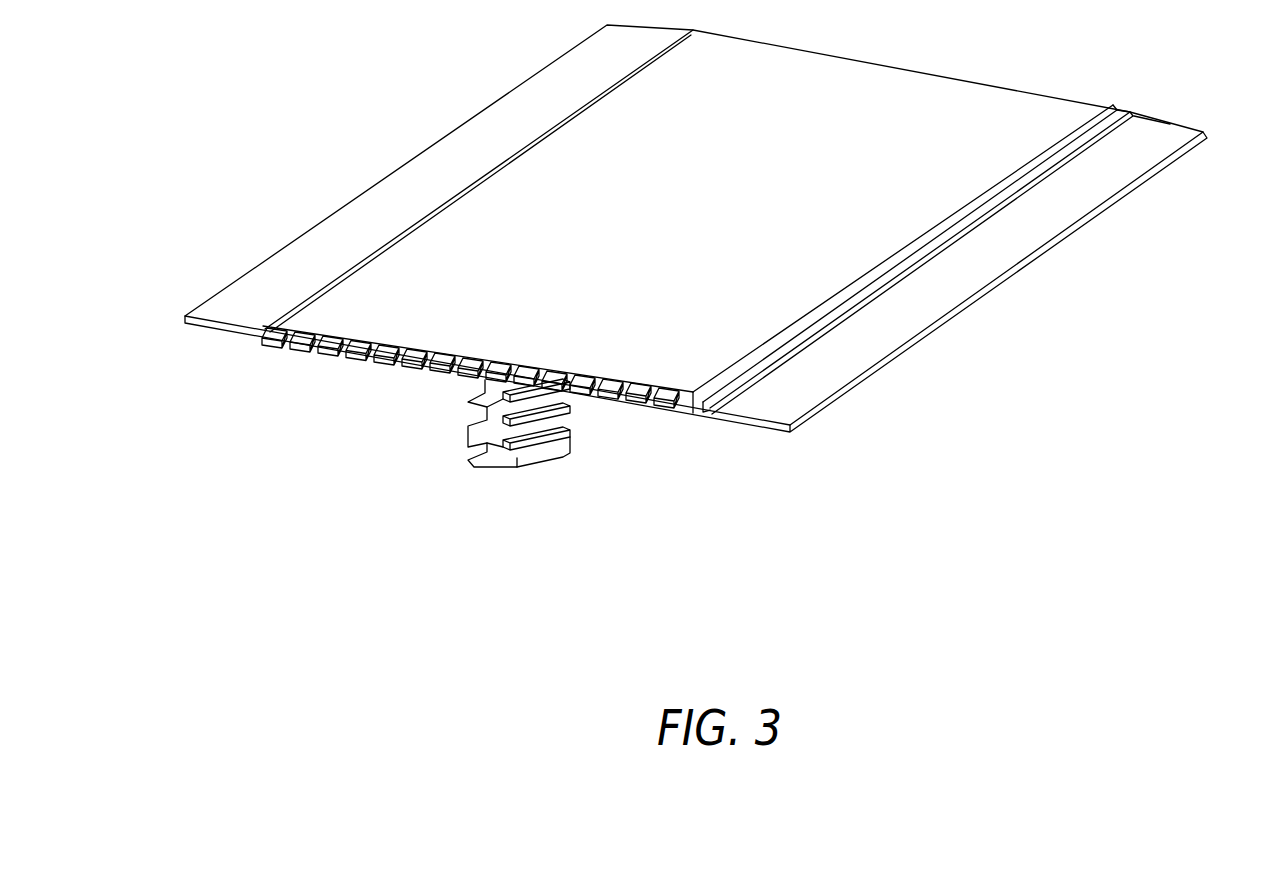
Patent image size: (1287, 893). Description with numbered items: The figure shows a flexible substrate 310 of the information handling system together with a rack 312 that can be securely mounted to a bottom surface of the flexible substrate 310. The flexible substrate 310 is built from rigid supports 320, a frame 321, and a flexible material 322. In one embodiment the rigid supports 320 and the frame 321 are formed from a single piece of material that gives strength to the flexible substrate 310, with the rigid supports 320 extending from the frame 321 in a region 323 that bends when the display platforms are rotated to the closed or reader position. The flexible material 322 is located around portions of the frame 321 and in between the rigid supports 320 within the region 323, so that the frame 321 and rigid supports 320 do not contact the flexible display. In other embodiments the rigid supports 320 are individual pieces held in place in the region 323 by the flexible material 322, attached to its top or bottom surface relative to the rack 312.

The flexible substrate 310 is at (463, 125).
The rack 312 is at (479, 463).
The rigid supports 320 is at (348, 361).
The frame 321 is at (1153, 135).
The flexible material 322 is at (978, 108).
The region 323 is at (693, 367).